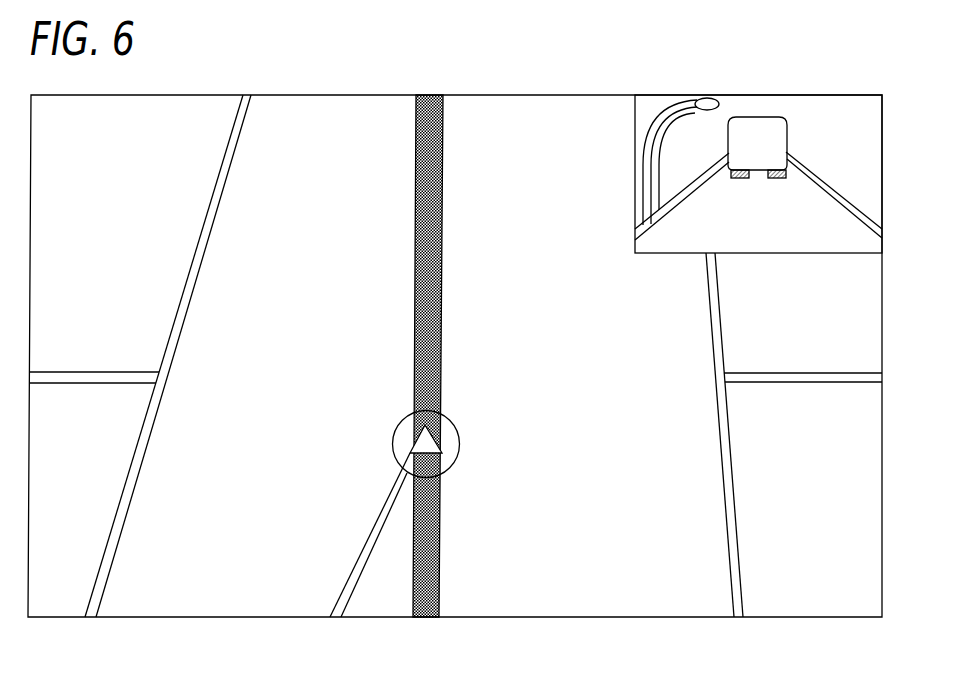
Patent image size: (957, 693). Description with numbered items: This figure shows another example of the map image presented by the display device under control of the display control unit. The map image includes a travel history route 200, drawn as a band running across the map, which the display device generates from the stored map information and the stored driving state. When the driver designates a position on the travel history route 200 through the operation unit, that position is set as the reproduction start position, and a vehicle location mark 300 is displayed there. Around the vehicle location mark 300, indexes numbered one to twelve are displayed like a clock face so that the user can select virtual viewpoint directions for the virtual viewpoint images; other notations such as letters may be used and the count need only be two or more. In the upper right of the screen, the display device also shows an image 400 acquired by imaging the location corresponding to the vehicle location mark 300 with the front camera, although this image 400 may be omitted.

The travel history route 200 is at (439, 595).
The vehicle location mark 300 is at (438, 439).
The image 400 is at (768, 94).